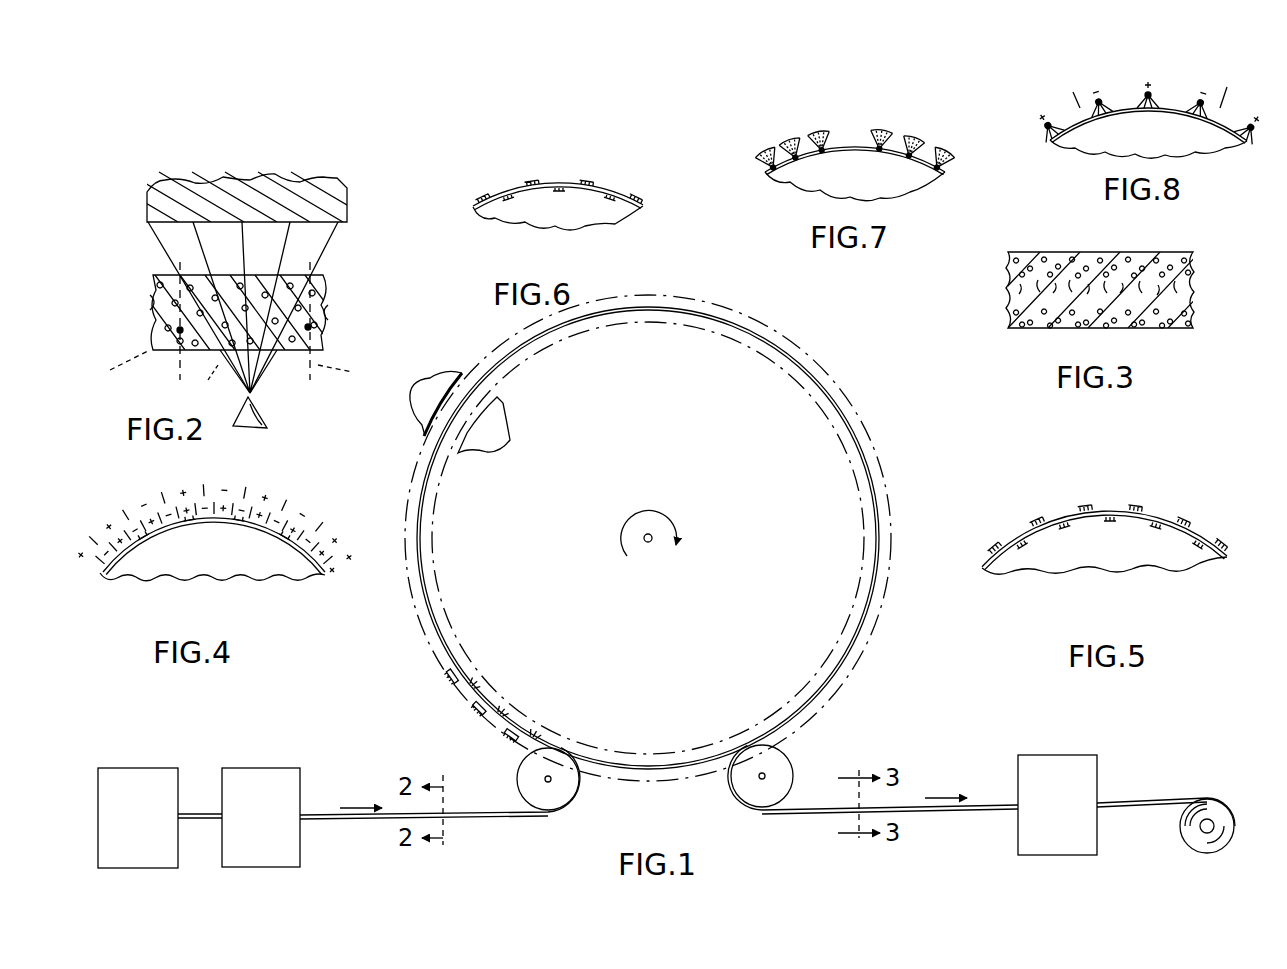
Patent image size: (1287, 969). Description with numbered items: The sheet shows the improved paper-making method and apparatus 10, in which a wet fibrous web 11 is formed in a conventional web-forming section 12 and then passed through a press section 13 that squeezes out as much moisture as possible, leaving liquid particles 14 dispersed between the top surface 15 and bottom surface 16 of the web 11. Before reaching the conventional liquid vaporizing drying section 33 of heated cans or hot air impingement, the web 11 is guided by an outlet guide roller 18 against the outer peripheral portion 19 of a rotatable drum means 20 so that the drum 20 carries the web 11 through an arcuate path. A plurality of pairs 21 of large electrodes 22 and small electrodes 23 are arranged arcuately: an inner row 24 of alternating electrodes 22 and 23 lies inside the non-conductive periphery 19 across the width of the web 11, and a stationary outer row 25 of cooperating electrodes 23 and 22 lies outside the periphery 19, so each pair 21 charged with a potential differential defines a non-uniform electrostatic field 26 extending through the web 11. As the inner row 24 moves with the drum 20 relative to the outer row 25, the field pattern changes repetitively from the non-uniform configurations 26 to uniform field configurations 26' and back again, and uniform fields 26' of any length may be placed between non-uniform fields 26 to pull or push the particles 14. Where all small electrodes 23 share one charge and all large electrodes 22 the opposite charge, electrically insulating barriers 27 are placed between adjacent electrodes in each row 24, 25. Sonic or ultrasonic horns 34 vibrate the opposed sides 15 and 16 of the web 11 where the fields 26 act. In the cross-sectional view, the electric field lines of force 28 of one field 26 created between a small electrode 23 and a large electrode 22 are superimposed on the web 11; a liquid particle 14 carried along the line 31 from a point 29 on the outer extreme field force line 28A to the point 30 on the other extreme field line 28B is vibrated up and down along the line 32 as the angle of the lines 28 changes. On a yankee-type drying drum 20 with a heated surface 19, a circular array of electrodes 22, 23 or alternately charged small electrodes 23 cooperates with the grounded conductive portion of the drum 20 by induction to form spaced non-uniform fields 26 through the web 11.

In FIG. 1, the method and apparatus 10 is at (836, 368).
In FIG. 5, the method and apparatus 10 is at (1195, 507).
In FIG. 1, the wet fibrous web 11 is at (203, 812).
In FIG. 2, the wet fibrous web 11 is at (323, 295).
In FIG. 3, the wet fibrous web 11 is at (1193, 290).
In FIG. 4, the wet fibrous web 11 is at (326, 573).
In FIG. 5, the wet fibrous web 11 is at (1228, 560).
In FIG. 6, the wet fibrous web 11 is at (482, 205).
In FIG. 7, the wet fibrous web 11 is at (895, 148).
In FIG. 8, the wet fibrous web 11 is at (1052, 140).
In FIG. 1, the web-forming section 12 is at (127, 768).
In FIG. 1, the press section 13 is at (262, 768).
In FIG. 2, the liquid particles 14 is at (205, 292).
In FIG. 3, the liquid particles 14 is at (1170, 255).
In FIG. 2, the top surface 15 is at (294, 275).
In FIG. 3, the top surface 15 is at (1052, 252).
In FIG. 2, the bottom surface 16 is at (160, 352).
In FIG. 3, the bottom surface 16 is at (1176, 328).
In FIG. 1, the guide roller 18 is at (784, 770).
In FIG. 1, the outer peripheral portion 19 is at (684, 767).
In FIG. 4, the outer peripheral portion 19 is at (312, 580).
In FIG. 5, the outer peripheral portion 19 is at (1200, 575).
In FIG. 6, the outer peripheral portion 19 is at (622, 215).
In FIG. 7, the outer peripheral portion 19 is at (925, 185).
In FIG. 8, the outer peripheral portion 19 is at (1215, 145).
In FIG. 1, the rotatable drum means 20 is at (650, 767).
In FIG. 4, the rotatable drum means 20 is at (225, 572).
In FIG. 5, the rotatable drum means 20 is at (1155, 570).
In FIG. 6, the rotatable drum means 20 is at (596, 215).
In FIG. 7, the rotatable drum means 20 is at (808, 188).
In FIG. 8, the rotatable drum means 20 is at (1108, 140).
In FIG. 1, the pairs of electrodes 21 is at (452, 694).
In FIG. 1, the large electrode 22 is at (500, 697).
In FIG. 2, the large electrode 22 is at (302, 188).
In FIG. 4, the large electrode 22 is at (258, 520).
In FIG. 5, the large electrode 22 is at (1078, 505).
In FIG. 6, the large electrode 22 is at (525, 188).
In FIG. 7, the large electrode 22 is at (773, 165).
In FIG. 8, the large electrode 22 is at (1150, 113).
In FIG. 1, the small electrode 23 is at (477, 674).
In FIG. 2, the small electrode 23 is at (270, 418).
In FIG. 4, the small electrode 23 is at (235, 515).
In FIG. 5, the small electrode 23 is at (1145, 516).
In FIG. 6, the small electrode 23 is at (508, 210).
In FIG. 7, the small electrode 23 is at (797, 143).
In FIG. 8, the small electrode 23 is at (1240, 108).
In FIG. 1, the inner row 24 is at (536, 725).
In FIG. 4, the inner row 24 is at (106, 583).
In FIG. 5, the inner row 24 is at (990, 575).
In FIG. 1, the outer row 25 is at (532, 747).
In FIG. 4, the outer row 25 is at (94, 578).
In FIG. 5, the outer row 25 is at (978, 568).
In FIG. 1, the non-uniform electrostatic field 26 is at (409, 664).
In FIG. 4, the non-uniform electrostatic field 26 is at (350, 541).
In FIG. 6, the non-uniform electrostatic field 26 is at (606, 170).
In FIG. 7, the non-uniform electrostatic field 26 is at (865, 116).
In FIG. 8, the non-uniform electrostatic field 26 is at (1050, 83).
In FIG. 5, the uniform field configuration 26' is at (1108, 479).
In FIG. 6, the uniform field configuration 26' is at (554, 243).
In FIG. 4, the electrically insulating barrier 27 is at (200, 500).
In FIG. 8, the electrically insulating barrier 27 is at (1123, 97).
In FIG. 2, the electric field lines of force 28 is at (262, 228).
In FIG. 2, the outer extreme field force line 28A is at (150, 300).
In FIG. 2, the other extreme field line 28B is at (330, 312).
In FIG. 2, the point 29 is at (178, 330).
In FIG. 2, the point 30 is at (311, 327).
In FIG. 2, the line 31 is at (203, 387).
In FIG. 2, the line 32 is at (235, 369).
In FIG. 1, the drying section 33 is at (1058, 755).
In FIG. 1, the sonic or ultrasonic fluid wave creating horns 34 is at (432, 372).